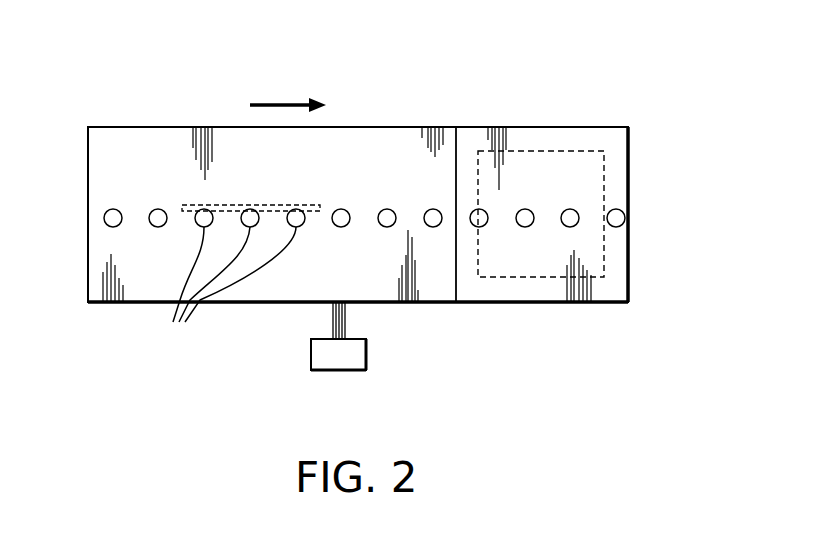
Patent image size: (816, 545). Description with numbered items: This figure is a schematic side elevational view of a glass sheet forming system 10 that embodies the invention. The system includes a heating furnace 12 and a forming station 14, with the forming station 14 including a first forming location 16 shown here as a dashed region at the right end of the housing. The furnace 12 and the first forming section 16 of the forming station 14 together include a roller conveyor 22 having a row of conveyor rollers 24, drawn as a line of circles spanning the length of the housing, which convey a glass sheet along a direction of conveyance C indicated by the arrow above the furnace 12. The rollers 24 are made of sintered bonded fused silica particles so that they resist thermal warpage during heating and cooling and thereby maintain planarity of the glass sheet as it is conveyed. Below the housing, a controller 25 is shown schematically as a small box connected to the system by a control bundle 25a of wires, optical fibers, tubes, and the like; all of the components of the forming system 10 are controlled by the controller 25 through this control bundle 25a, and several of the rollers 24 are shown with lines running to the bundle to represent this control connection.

The glass sheet forming system 10 is at (458, 55).
The heating furnace 12 is at (352, 120).
The forming station 14 is at (643, 163).
The first forming location 16 is at (537, 312).
The roller conveyor 22 is at (96, 219).
The conveyor rollers 24 is at (232, 289).
The controller 25 is at (367, 353).
The control bundle 25a is at (335, 320).
The direction of conveyance C is at (295, 102).